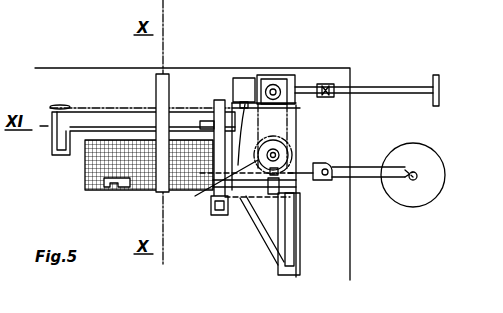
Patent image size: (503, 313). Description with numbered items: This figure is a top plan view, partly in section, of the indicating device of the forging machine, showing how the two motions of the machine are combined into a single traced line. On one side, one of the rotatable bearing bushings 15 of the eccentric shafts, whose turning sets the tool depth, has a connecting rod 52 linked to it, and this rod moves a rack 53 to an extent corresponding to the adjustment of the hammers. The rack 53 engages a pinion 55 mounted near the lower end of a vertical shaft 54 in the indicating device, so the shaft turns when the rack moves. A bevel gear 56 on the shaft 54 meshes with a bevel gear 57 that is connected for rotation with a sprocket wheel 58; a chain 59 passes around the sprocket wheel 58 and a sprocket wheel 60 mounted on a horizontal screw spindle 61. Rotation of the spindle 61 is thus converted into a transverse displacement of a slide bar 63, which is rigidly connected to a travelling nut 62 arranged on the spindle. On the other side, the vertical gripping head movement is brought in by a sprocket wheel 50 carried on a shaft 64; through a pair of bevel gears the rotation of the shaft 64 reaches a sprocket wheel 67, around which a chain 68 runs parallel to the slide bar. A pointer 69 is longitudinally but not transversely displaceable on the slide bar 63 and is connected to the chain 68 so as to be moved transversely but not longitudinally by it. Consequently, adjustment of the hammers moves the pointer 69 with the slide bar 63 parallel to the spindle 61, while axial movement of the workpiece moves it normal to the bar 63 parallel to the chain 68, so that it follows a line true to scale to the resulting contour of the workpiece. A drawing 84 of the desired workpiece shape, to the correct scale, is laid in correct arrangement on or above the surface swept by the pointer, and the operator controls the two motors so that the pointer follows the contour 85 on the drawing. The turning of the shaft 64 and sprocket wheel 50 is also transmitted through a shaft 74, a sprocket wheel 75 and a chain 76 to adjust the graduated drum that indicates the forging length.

The bearing bushing 15 is at (428, 160).
The sprocket wheel 50 is at (440, 92).
The connecting rod 52 is at (368, 177).
The rack 53 is at (338, 167).
The vertical shaft 54 is at (273, 150).
The pinion 55 is at (296, 173).
The bevel gear 56 is at (252, 163).
The bevel gear 57 is at (268, 185).
The sprocket wheel 58 is at (282, 197).
The chain 59 is at (246, 198).
The sprocket wheel 60 is at (213, 204).
The horizontal screw spindle 61 is at (194, 110).
The travelling nut 62 is at (223, 110).
The slide bar 63 is at (119, 128).
The shaft 64 is at (381, 88).
The sprocket wheel 67 is at (258, 109).
The chain 68 is at (96, 108).
The pointer 69 is at (160, 178).
The shaft 74 is at (278, 90).
The sprocket wheel 75 is at (268, 78).
The chain 76 is at (297, 132).
The drawing 84 is at (84, 164).
The contour 85 is at (114, 190).